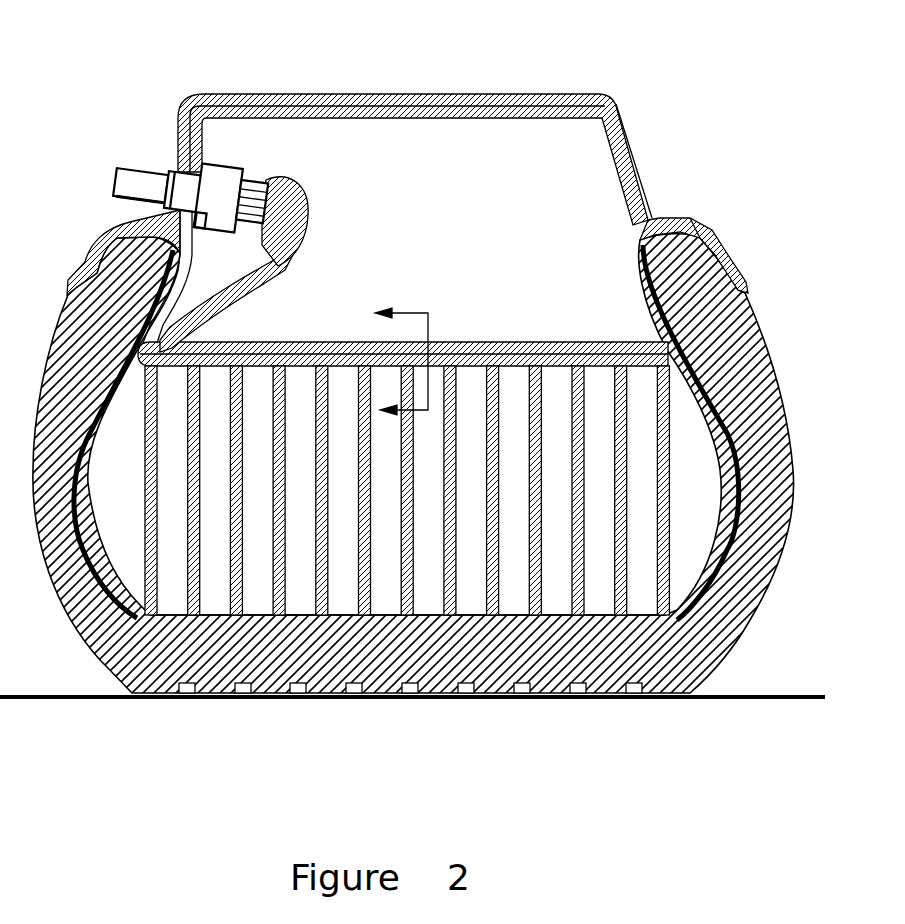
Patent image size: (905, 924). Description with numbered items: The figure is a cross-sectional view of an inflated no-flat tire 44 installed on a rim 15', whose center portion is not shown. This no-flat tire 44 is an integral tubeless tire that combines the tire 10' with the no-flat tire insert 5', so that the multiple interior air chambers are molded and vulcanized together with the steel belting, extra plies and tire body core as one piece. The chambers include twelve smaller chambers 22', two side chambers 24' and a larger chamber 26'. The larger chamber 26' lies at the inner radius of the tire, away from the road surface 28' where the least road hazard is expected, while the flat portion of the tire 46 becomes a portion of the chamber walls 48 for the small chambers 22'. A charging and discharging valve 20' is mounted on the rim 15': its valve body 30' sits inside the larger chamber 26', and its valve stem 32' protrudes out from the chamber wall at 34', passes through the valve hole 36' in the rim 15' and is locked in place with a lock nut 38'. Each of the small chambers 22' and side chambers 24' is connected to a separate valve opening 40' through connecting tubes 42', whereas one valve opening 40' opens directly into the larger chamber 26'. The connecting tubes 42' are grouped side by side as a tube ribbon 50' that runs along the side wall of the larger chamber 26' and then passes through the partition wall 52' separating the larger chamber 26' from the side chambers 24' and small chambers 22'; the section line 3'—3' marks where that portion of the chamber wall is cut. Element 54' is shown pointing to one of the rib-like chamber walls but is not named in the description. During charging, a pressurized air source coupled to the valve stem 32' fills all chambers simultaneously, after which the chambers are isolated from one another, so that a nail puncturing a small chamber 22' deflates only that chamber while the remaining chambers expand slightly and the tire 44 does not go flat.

The tire 10' is at (450, 389).
The no-flat tire insert 5' is at (407, 159).
The rim 15' is at (440, 124).
The charging and discharging valve 20' is at (193, 170).
The small chambers 22' is at (414, 479).
The side chambers 24' is at (408, 479).
The larger chamber 26' is at (517, 199).
The road surface 28' is at (433, 655).
The valve body 30' is at (218, 198).
The valve stem 32' is at (114, 134).
The chamber wall protrusion point 34' is at (201, 220).
The valve hole 36' is at (183, 191).
The lock nut 38' is at (140, 199).
The valve openings 40' is at (252, 201).
The connecting tubes 42' is at (328, 221).
The no-flat tire 44 is at (783, 475).
The flat portion of the tire 46 is at (433, 652).
The chamber walls 48 is at (297, 615).
The tube ribbon 50' is at (233, 281).
The partition wall 52' is at (403, 315).
The rib 54' is at (407, 451).
The section line 3'— 3' is at (401, 342).